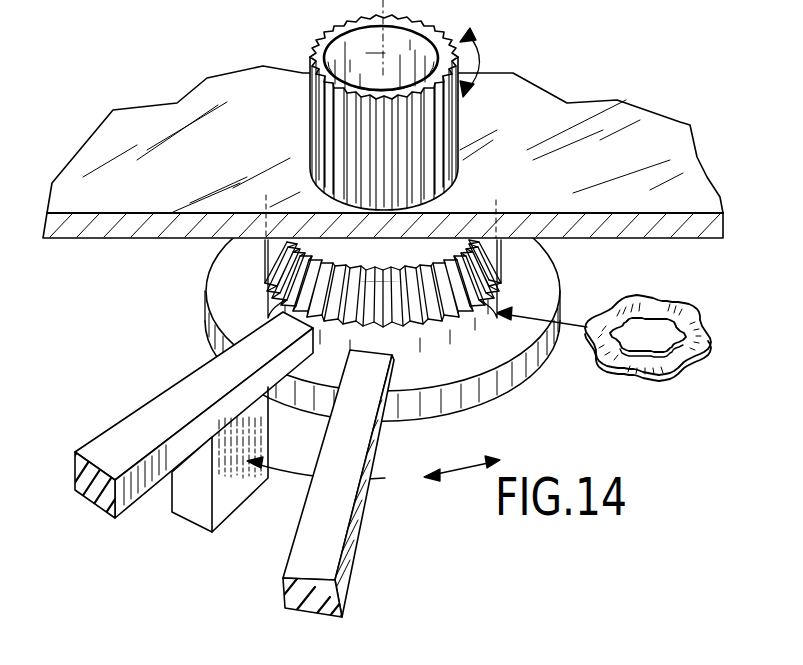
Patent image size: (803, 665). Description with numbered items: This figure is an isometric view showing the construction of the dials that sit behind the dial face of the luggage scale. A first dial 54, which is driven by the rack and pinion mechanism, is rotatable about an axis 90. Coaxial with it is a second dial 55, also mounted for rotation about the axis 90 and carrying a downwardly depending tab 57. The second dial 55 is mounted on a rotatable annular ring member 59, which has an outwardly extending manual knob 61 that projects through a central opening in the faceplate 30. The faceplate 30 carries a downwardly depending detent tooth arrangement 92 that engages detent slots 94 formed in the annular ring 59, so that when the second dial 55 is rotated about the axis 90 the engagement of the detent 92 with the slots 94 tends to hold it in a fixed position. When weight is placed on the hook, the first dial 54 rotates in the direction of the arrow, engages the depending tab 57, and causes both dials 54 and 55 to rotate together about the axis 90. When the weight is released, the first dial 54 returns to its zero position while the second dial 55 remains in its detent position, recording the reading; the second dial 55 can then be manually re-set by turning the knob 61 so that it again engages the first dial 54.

The faceplate 30 is at (567, 197).
The first dial 54 is at (352, 557).
The second dial 55 is at (178, 400).
The downwardly depending tab 57 is at (222, 503).
The rotatable annular ring member 59 is at (497, 275).
The manual knob 61 is at (455, 125).
The axis 90 is at (352, 48).
The detent tooth arrangement 92 is at (413, 331).
The detent slots 94 is at (357, 337).